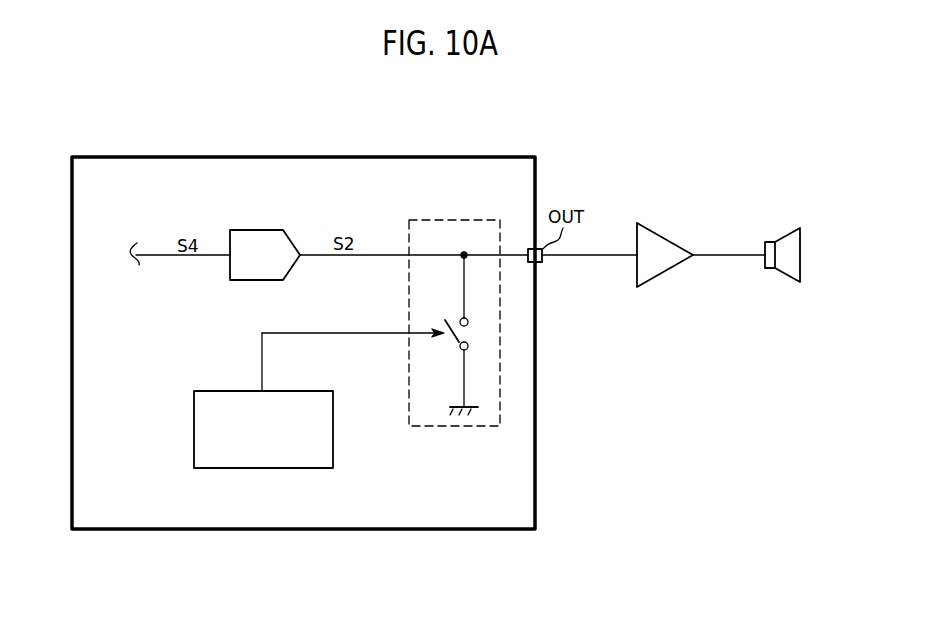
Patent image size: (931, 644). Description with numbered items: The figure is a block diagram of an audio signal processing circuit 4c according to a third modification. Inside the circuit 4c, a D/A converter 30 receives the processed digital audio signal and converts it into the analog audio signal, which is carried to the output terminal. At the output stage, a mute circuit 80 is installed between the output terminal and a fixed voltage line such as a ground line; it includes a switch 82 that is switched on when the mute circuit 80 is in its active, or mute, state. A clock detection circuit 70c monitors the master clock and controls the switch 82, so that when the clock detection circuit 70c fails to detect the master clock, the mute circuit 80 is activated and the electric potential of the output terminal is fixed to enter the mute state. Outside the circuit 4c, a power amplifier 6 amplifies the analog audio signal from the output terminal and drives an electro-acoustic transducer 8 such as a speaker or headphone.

The audio signal processing circuit 4c is at (358, 157).
The D/A converter 30 is at (257, 230).
The mute circuit 80 is at (447, 220).
The switch 82 is at (440, 352).
The clock detection circuit 70c is at (277, 470).
The power amplifier 6 is at (660, 235).
The electro-acoustic transducer 8 is at (783, 238).